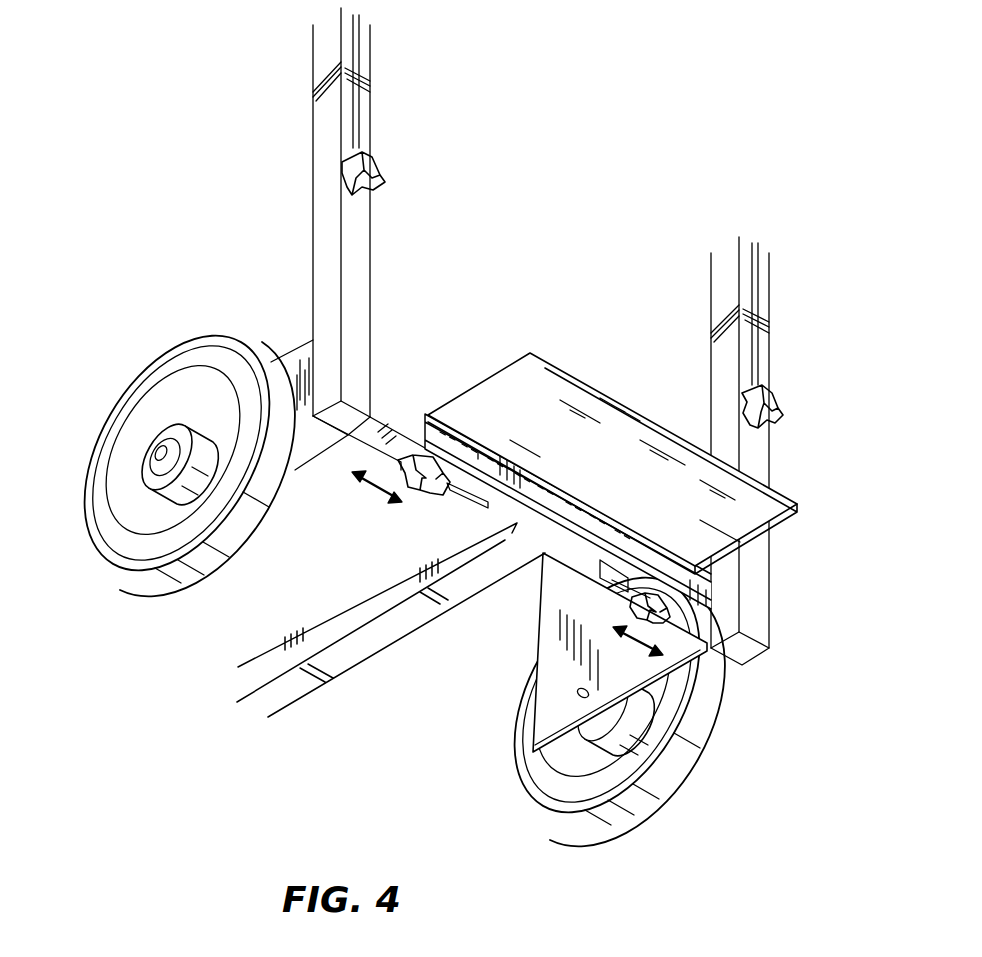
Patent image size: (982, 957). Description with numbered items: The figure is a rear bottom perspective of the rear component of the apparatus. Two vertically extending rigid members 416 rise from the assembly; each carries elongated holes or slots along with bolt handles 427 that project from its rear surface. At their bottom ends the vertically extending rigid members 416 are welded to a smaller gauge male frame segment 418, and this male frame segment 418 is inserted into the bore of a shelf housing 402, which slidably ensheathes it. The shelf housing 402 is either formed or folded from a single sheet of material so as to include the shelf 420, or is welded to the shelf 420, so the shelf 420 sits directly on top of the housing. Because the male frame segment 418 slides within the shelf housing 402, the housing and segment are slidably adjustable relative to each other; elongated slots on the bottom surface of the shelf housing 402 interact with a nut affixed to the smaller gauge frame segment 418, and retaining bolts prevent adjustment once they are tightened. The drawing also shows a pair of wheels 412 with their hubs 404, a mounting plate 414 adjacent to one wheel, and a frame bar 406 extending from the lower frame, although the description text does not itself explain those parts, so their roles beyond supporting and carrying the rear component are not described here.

The shelf housing 402 is at (517, 525).
The axle hub 404 is at (163, 453).
The frame bar 406 is at (380, 638).
The wheel 412 is at (192, 348).
The mounting plate 414 is at (565, 646).
The vertically extending rigid members 416 is at (315, 118).
The smaller gauge (male) frame segment 418 is at (393, 407).
The shelf 420 is at (700, 485).
The bolt handles 427 is at (380, 167).